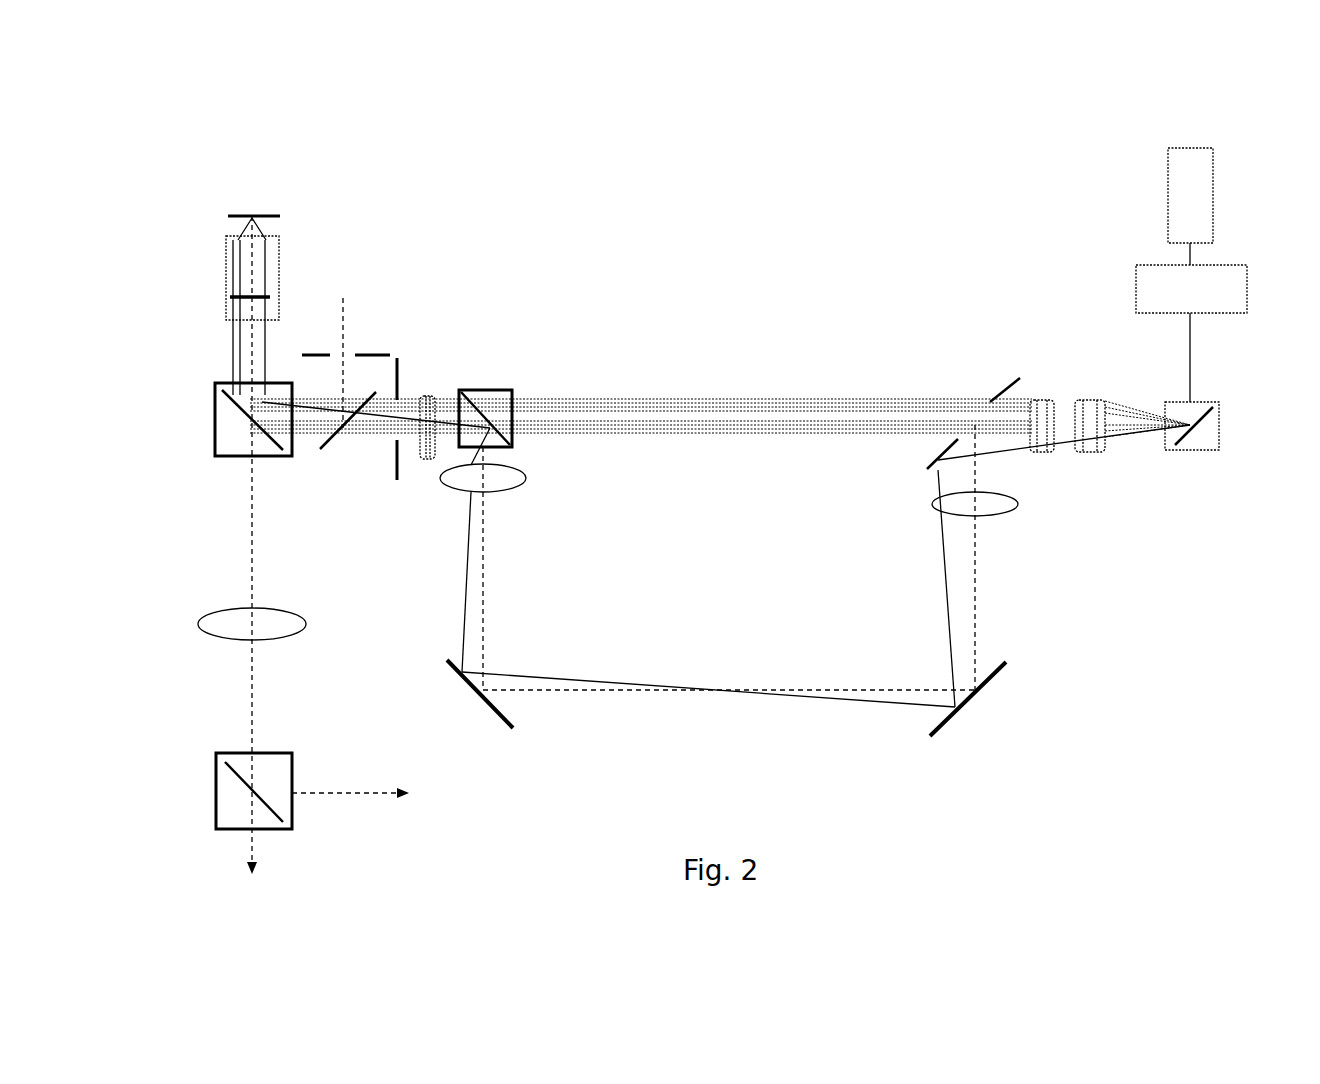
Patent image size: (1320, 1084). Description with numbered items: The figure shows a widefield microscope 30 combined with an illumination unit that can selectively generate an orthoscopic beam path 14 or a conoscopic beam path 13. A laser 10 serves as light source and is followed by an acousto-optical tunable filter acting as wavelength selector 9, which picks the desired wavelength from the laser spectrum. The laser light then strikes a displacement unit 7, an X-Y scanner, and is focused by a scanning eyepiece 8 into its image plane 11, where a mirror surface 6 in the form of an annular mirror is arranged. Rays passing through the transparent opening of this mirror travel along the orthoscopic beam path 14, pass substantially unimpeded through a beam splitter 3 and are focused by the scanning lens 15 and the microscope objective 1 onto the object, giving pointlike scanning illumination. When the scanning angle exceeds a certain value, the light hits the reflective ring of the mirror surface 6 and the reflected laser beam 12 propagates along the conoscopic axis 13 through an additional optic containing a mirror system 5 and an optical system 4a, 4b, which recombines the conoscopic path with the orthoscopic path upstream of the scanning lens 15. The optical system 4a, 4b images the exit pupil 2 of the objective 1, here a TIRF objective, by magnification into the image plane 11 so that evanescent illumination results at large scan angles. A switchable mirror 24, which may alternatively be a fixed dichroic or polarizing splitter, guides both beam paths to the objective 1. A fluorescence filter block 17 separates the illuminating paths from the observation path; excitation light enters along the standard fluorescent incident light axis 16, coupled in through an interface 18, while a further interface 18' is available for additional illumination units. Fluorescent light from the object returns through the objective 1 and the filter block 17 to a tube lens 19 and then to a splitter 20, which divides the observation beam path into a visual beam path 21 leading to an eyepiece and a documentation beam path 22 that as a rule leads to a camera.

The microscope objective 1 is at (283, 250).
The exit pupil 2 is at (232, 290).
The beam splitter 3 is at (500, 386).
The optical system 4a is at (508, 480).
The optical system 4b is at (1008, 513).
The mirror system 5 is at (932, 725).
The mirror surface 6 is at (1000, 395).
The displacement unit 7 is at (1200, 450).
The scanning eyepiece 8 is at (1067, 396).
The wavelength selector 9 is at (1136, 273).
The laser 10 is at (1168, 162).
The image plane 11 is at (975, 428).
The laser beam 12 is at (945, 568).
The conoscopic beam path 13 is at (705, 688).
The orthoscopic beam path 14 is at (722, 418).
The scanning lens 15 is at (432, 390).
The fluorescent incident light axis 16 is at (343, 348).
The fluorescence filter block 17 is at (210, 415).
The interface 18 is at (347, 293).
The further interface 18' is at (418, 375).
The tube lens 19 is at (210, 607).
The splitter 20 is at (214, 751).
The visual beam path 21 is at (252, 897).
The documentation beam path 22 is at (371, 793).
The mirror 24 is at (338, 440).
The microscope 30 is at (238, 513).